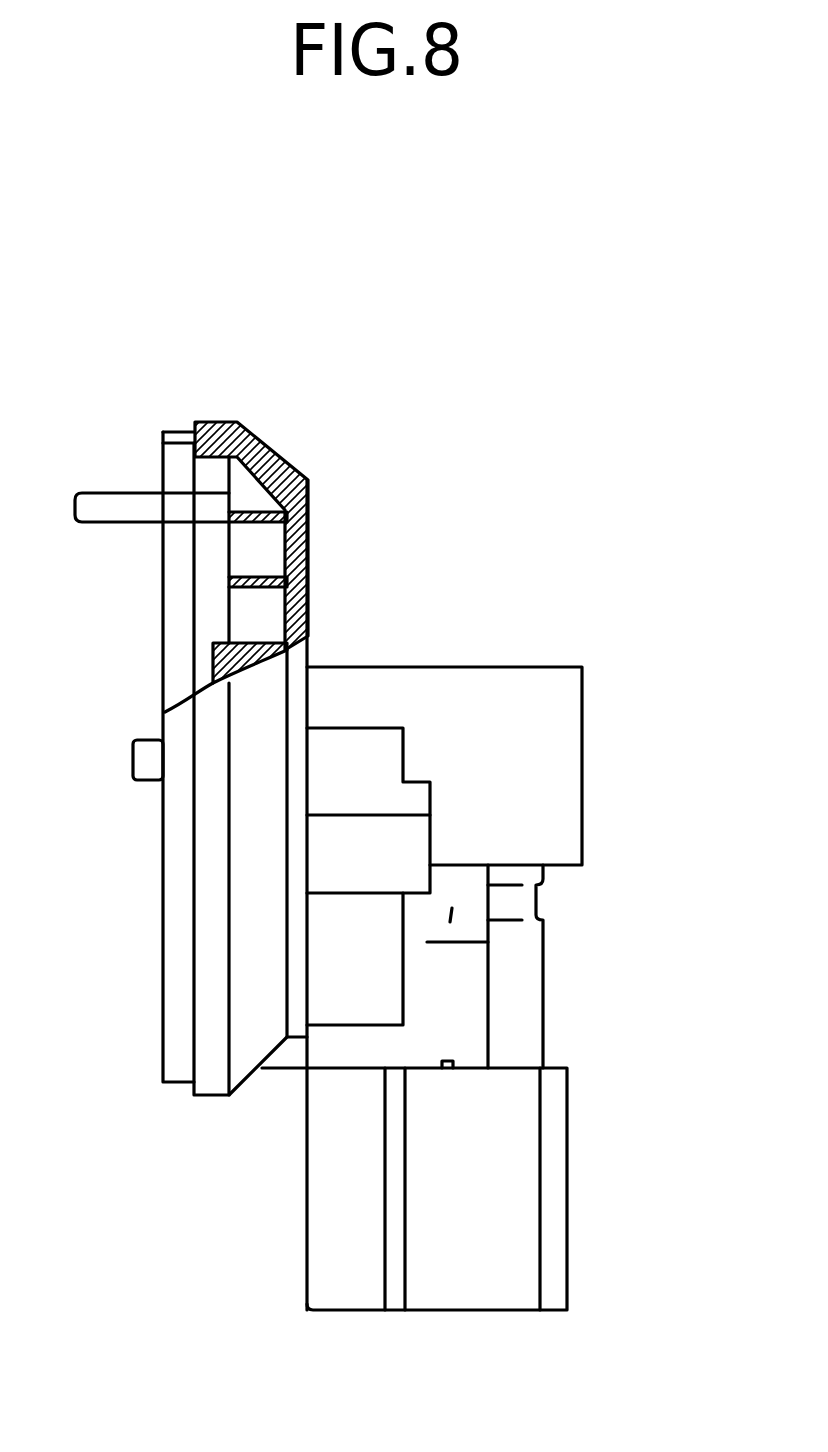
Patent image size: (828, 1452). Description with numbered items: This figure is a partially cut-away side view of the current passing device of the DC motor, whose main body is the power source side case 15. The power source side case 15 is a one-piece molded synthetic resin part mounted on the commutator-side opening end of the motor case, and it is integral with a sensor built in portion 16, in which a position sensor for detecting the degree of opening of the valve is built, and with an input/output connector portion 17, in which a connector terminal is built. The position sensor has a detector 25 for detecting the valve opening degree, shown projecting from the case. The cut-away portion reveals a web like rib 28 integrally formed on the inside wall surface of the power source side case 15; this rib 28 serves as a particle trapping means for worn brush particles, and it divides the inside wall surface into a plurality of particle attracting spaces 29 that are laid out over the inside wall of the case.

The power source side case 15 is at (285, 452).
The sensor built in portion 16 is at (542, 790).
The input/output connector portion 17 is at (483, 1228).
The detector 25 is at (133, 761).
The web like rib 28 is at (268, 524).
The particle attracting spaces 29 is at (258, 618).